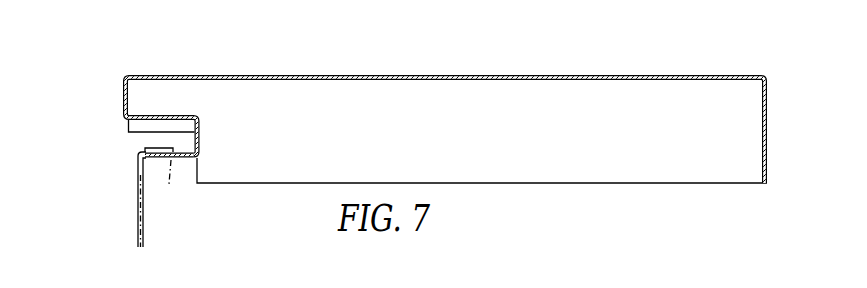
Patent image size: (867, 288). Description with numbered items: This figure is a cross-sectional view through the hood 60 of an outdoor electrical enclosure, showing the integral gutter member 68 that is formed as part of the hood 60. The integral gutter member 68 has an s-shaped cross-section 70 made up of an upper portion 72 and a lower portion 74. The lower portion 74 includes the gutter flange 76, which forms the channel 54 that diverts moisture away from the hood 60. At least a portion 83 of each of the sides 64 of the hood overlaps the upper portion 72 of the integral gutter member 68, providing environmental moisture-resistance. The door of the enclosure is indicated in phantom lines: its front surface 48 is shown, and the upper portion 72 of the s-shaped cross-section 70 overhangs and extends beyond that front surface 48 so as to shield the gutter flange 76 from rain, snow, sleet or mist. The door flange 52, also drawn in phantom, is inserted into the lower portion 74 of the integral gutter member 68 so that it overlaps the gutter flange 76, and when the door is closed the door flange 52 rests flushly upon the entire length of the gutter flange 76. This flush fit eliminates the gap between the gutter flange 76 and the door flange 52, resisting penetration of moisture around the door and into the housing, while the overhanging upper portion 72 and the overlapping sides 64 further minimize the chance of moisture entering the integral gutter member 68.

The hood 60 is at (496, 208).
The sides 64 is at (721, 167).
The s-shaped cross-section 70 is at (118, 92).
The upper portion 72 is at (131, 94).
The integral gutter member 68 is at (122, 125).
The portion of the sides 83 is at (176, 124).
The lower portion 74 is at (199, 133).
The gutter flange 76 is at (186, 161).
The front surface 48 is at (137, 174).
The channel 54 is at (144, 139).
The door flange 52 is at (176, 185).